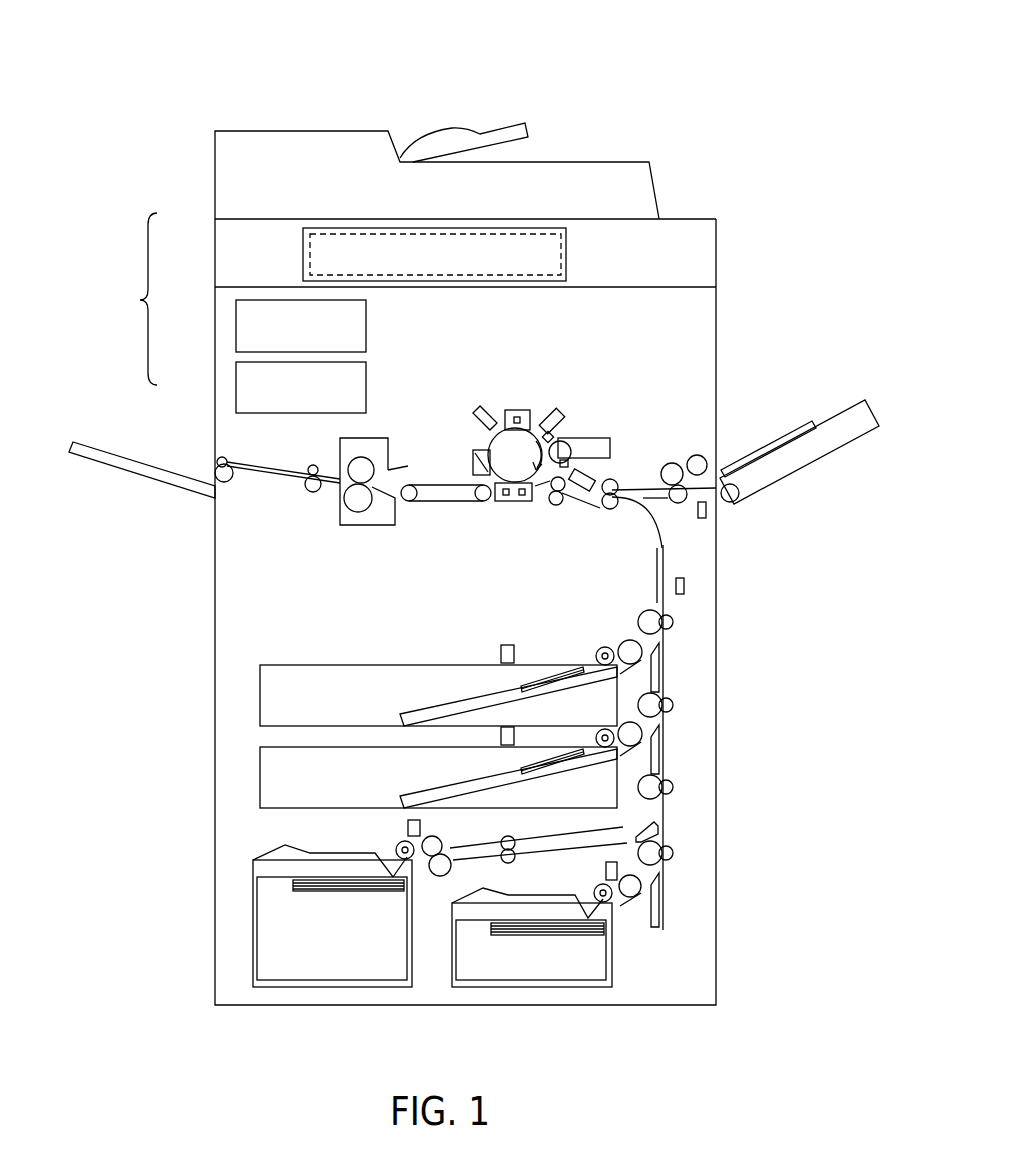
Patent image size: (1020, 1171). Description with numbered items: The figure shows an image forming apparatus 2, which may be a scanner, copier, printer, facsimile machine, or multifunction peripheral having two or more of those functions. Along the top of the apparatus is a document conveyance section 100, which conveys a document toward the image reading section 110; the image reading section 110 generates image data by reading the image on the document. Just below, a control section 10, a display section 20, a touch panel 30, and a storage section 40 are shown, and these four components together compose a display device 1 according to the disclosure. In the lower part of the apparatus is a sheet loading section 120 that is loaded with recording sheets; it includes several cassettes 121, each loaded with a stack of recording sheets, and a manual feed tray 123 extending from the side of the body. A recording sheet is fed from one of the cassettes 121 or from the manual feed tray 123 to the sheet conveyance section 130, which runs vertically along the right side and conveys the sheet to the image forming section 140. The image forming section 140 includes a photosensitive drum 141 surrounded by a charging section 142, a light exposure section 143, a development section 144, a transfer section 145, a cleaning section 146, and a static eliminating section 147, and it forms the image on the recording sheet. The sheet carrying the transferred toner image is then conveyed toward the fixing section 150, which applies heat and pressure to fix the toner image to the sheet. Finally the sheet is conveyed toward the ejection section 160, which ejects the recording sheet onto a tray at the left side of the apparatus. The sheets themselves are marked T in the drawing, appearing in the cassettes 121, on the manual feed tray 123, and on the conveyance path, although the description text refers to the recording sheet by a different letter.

The display device 1 is at (137, 299).
The image forming apparatus 2 is at (497, 98).
The control section 10 is at (236, 328).
The display section 20 is at (303, 242).
The touch panel 30 is at (310, 267).
The storage section 40 is at (236, 376).
The document conveyance section 100 is at (594, 162).
The image reading section 110 is at (716, 238).
The sheet loading section 120 is at (275, 826).
The cassette 121 is at (260, 680).
The manual feed tray 123 is at (836, 413).
The sheet conveyance section 130 is at (695, 748).
The image forming section 140 is at (429, 421).
The photosensitive drum 141 is at (492, 443).
The charging section 142 is at (518, 409).
The light exposure section 143 is at (556, 415).
The development section 144 is at (609, 450).
The transfer section 145 is at (514, 501).
The cleaning section 146 is at (473, 460).
The static eliminating section 147 is at (478, 406).
The fixing section 150 is at (384, 536).
The ejection section 160 is at (208, 455).
The paper sheet T is at (770, 437).